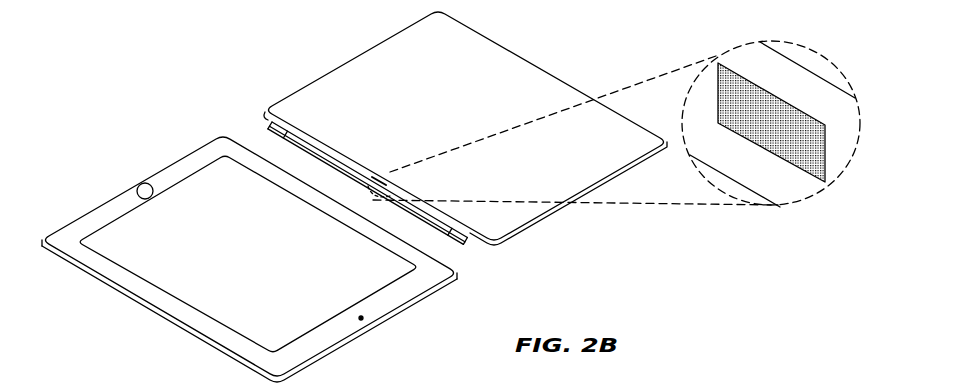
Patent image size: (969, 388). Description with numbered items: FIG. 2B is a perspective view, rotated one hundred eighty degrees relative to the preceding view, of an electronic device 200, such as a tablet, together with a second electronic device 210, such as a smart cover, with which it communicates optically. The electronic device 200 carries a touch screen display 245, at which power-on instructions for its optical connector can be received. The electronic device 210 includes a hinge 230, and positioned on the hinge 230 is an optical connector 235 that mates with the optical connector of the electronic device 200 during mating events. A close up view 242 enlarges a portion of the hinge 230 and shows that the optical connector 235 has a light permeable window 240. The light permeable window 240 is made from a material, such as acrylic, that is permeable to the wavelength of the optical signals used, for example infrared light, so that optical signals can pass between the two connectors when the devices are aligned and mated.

The electronic device 200 is at (150, 153).
The electronic device 210 is at (322, 63).
The hinge 230 is at (268, 124).
The optical connector 235 is at (379, 168).
The light permeable window 240 is at (807, 155).
The close up view 242 is at (793, 42).
The touch screen display 245 is at (223, 293).